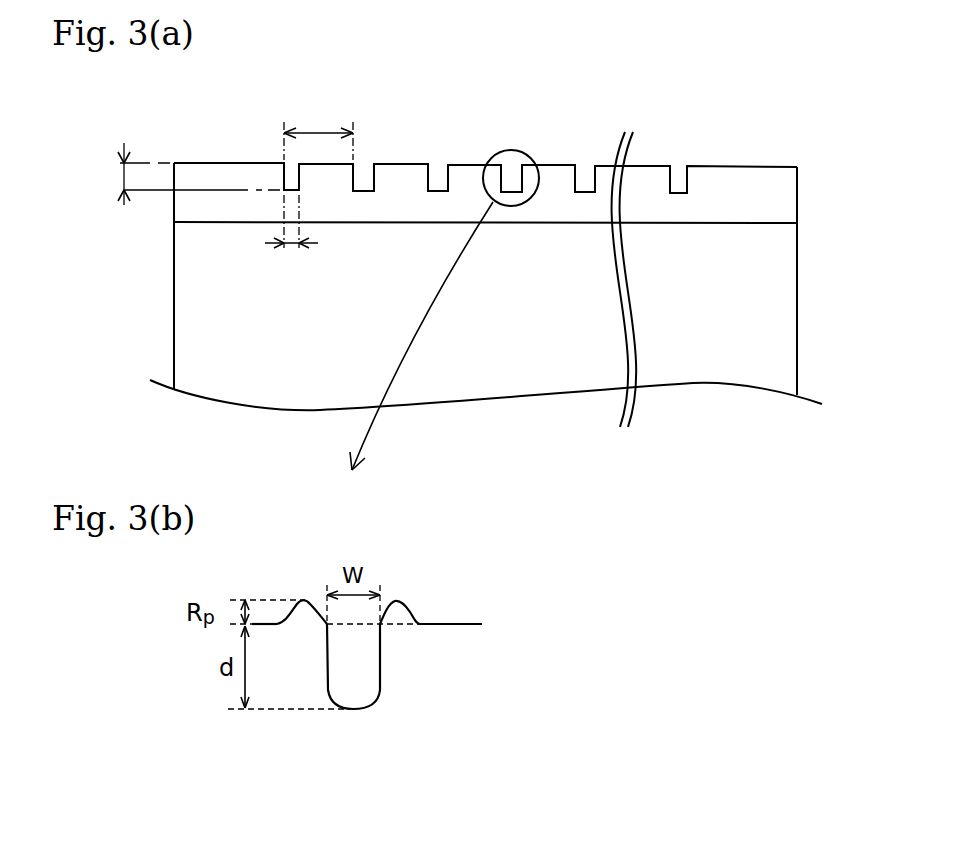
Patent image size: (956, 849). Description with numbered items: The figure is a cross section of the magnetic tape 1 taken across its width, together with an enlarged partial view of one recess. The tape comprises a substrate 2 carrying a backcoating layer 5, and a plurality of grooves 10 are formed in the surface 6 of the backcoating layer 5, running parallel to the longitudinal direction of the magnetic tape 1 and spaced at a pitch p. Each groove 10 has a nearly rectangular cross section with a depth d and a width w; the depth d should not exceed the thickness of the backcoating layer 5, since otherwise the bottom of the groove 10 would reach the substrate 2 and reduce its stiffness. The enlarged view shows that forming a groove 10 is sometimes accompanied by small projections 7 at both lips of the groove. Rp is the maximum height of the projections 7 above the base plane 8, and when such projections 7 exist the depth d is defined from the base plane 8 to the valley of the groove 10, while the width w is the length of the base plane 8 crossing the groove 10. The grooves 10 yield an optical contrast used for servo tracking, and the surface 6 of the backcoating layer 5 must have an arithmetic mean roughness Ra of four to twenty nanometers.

In FIG. 3A, the magnetic tape 1 is at (816, 104).
In FIG. 3A, the substrate 2 is at (195, 300).
In FIG. 3A, the backcoating layer 5 is at (190, 205).
In FIG. 3A, the surface of backcoating layer 6 is at (398, 163).
In FIG. 3B, the projections 7 is at (303, 600).
In FIG. 3B, the base plane 8 is at (268, 621).
In FIG. 3A, the groove 10 is at (437, 187).
In FIG. 3B, the groove 10 is at (378, 577).